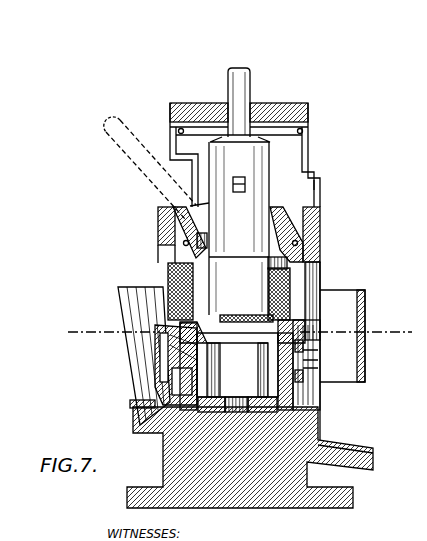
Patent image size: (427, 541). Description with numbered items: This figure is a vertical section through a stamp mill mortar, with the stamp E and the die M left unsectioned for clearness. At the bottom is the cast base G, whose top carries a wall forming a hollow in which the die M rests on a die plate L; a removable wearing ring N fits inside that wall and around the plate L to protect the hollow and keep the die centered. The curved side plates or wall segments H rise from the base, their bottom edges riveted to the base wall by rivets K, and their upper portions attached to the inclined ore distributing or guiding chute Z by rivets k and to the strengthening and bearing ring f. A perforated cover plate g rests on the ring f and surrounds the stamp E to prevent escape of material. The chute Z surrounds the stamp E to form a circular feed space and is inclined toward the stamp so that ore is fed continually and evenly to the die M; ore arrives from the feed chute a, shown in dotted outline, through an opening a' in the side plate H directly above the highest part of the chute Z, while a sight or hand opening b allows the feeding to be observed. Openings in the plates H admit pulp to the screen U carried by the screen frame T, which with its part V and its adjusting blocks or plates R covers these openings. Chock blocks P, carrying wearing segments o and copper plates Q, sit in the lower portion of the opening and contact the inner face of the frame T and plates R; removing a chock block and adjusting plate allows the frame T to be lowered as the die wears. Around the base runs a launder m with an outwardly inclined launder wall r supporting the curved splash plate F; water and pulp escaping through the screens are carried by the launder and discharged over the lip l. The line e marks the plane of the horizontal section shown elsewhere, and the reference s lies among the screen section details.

The stamp E is at (252, 84).
The perforated cover plate g is at (274, 103).
The strengthening and bearing ring f is at (307, 132).
The wall segments or curved side plates H is at (309, 162).
The sight or hand opening b is at (306, 186).
The feed chute a is at (150, 168).
The opening a' is at (164, 186).
The ore distributing or guiding chute Z is at (274, 228).
The rivets k is at (185, 250).
The screen frame part V is at (320, 225).
The screen U is at (168, 265).
The screen frame T is at (320, 270).
The section line e is at (239, 324).
The curved splash plate or apron F is at (118, 290).
The screws s is at (155, 377).
The die plate L is at (222, 401).
The removable wearing ring N is at (198, 382).
The die M is at (218, 346).
The chock block P is at (318, 350).
The copper plate Q is at (307, 318).
The adjusting block or plate R is at (318, 382).
The rivets K is at (310, 415).
The wearing segment o is at (282, 337).
The launder wall r is at (130, 411).
The launder m is at (140, 433).
The base G is at (247, 508).
The lip l is at (375, 472).